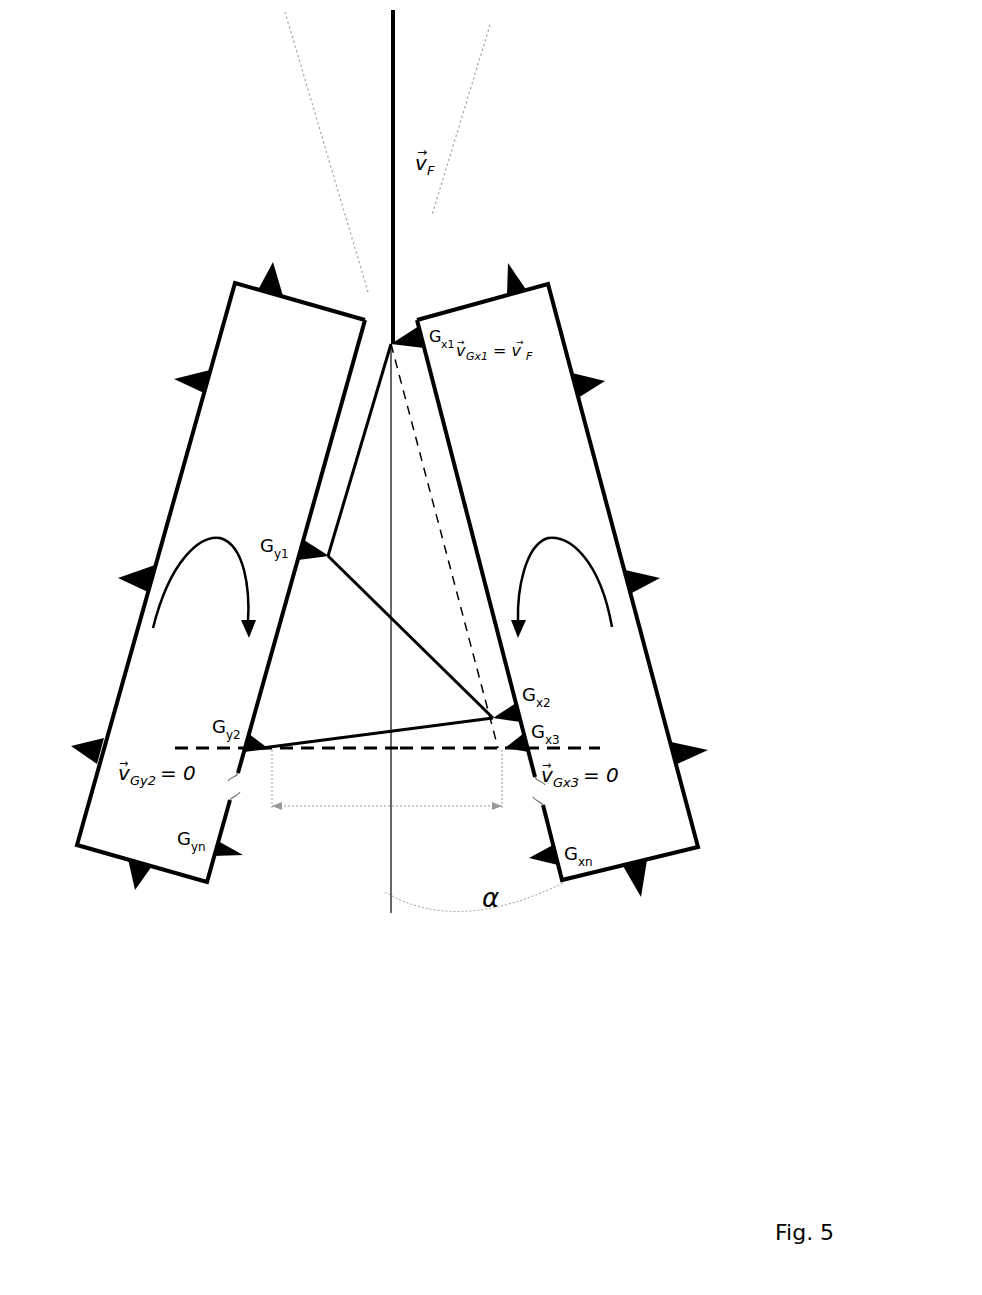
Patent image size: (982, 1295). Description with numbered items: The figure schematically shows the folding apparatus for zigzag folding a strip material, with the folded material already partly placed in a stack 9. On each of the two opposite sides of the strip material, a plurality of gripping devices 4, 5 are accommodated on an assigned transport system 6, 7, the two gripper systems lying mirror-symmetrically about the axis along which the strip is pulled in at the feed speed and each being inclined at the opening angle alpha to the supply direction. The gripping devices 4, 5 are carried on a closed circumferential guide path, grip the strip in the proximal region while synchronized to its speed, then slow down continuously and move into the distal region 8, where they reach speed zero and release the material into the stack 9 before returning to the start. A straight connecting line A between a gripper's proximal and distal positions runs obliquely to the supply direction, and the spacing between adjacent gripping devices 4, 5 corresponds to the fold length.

The gripping device 4 is at (697, 742).
The gripping device 5 is at (133, 887).
The transport system 6 is at (607, 502).
The transport system 7 is at (130, 658).
The distal region 8 is at (477, 750).
The stack 9 is at (343, 750).
The straight connecting line A is at (430, 490).